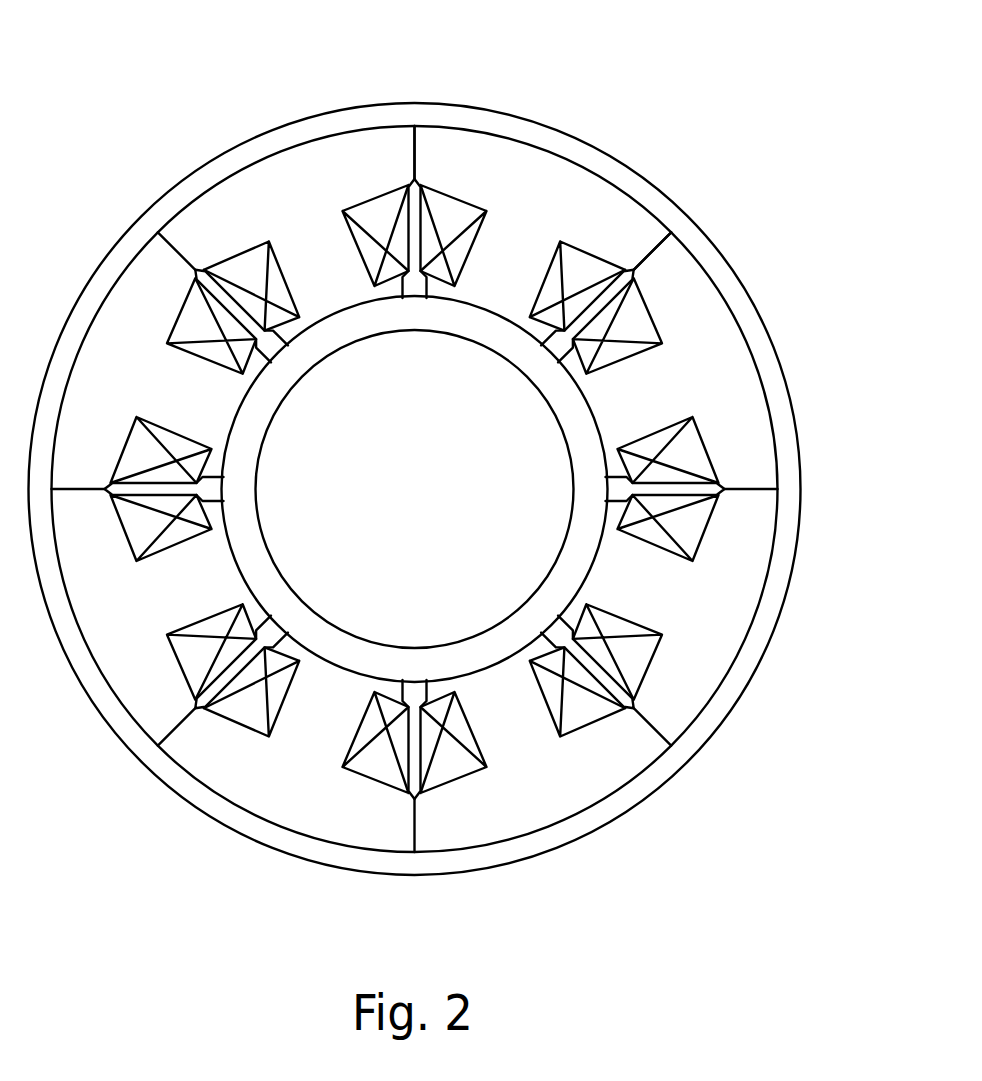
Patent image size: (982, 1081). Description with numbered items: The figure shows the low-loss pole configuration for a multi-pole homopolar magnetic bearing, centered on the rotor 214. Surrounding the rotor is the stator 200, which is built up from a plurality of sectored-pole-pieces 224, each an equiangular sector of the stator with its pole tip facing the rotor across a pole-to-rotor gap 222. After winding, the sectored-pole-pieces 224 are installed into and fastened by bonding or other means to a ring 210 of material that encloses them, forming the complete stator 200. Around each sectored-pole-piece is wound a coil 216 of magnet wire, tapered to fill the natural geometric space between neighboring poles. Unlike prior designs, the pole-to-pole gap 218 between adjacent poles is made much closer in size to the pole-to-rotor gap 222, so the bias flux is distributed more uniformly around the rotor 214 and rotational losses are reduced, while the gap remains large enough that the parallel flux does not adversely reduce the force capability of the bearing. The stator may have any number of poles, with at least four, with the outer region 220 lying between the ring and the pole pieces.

The stator 200 is at (187, 208).
The ring 210 is at (753, 303).
The rotor 214 is at (438, 505).
The coils 216 is at (368, 217).
The pole-to-pole gap 218 is at (270, 633).
The yoke 220 is at (658, 393).
The pole-to-rotor gap 222 is at (490, 648).
The sectored-pole-pieces 224 is at (532, 207).